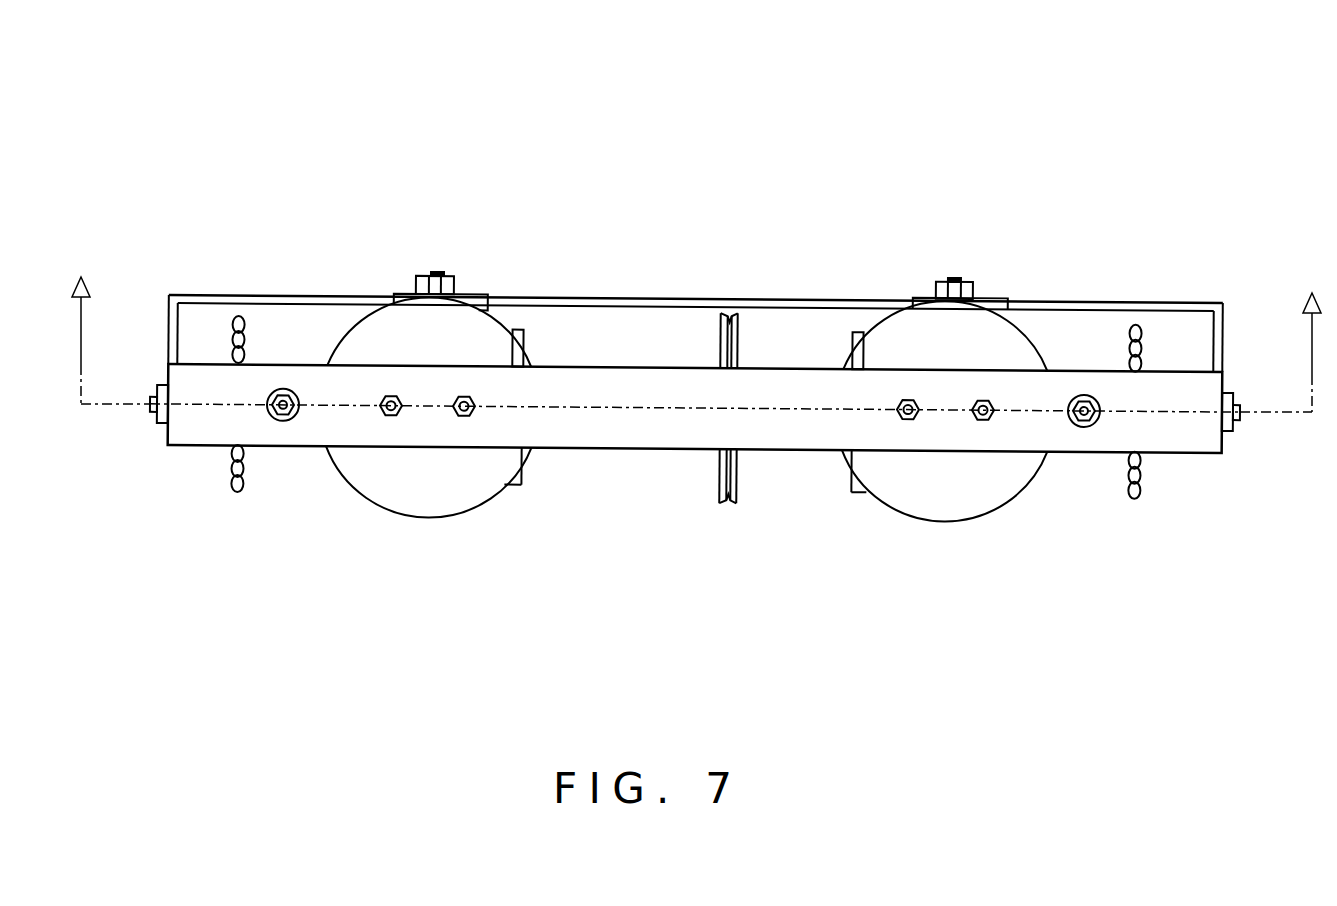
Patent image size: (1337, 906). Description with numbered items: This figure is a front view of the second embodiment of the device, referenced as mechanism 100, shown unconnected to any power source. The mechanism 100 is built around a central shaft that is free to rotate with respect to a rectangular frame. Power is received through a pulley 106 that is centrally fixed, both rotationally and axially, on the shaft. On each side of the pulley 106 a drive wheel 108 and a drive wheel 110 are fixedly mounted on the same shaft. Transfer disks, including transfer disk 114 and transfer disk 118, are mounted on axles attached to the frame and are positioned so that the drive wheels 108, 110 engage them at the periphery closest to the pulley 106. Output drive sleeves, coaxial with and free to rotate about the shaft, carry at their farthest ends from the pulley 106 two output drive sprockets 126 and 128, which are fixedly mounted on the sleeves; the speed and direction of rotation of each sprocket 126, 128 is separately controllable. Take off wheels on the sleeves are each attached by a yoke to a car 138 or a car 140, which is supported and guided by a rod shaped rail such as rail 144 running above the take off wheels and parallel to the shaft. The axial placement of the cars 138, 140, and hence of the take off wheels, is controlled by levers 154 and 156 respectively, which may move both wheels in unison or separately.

The mechanism 100 is at (690, 174).
The pulley 106 is at (718, 490).
The drive wheel 108 is at (855, 487).
The drive wheel 110 is at (522, 481).
The transfer disk 114 is at (415, 495).
The transfer disk 118 is at (960, 495).
The output drive sprocket 126 is at (230, 488).
The output drive sprocket 128 is at (1142, 490).
The car 138 is at (487, 295).
The car 140 is at (1005, 297).
The rail 144 is at (200, 295).
The lever 154 is at (430, 272).
The lever 156 is at (948, 273).